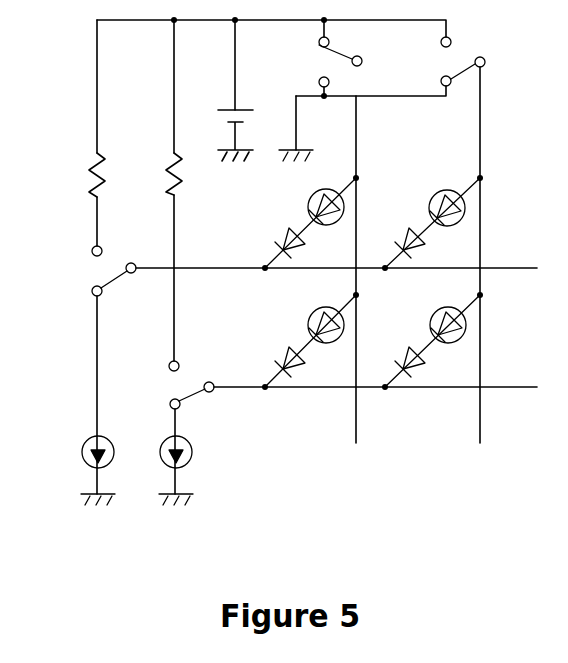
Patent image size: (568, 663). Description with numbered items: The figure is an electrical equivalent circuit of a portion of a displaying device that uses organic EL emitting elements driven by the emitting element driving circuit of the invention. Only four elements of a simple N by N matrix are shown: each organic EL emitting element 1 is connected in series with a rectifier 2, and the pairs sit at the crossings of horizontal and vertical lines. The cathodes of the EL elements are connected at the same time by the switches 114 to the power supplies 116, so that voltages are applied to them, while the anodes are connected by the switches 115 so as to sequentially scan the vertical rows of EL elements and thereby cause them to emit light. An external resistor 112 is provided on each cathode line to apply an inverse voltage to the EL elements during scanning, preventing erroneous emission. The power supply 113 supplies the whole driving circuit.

The organic EL emitting element 1 is at (333, 192).
The rectifier 2 is at (286, 242).
The external resistor 112 is at (173, 155).
The power supply 113 is at (240, 107).
The switch 114 is at (96, 285).
The switch 115 is at (343, 53).
The power supply 116 is at (85, 444).